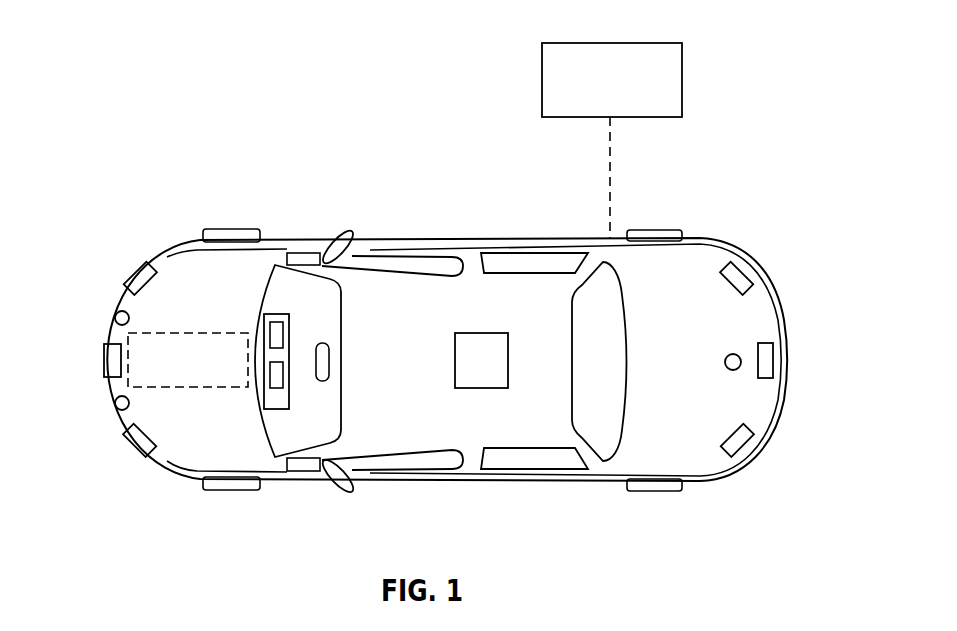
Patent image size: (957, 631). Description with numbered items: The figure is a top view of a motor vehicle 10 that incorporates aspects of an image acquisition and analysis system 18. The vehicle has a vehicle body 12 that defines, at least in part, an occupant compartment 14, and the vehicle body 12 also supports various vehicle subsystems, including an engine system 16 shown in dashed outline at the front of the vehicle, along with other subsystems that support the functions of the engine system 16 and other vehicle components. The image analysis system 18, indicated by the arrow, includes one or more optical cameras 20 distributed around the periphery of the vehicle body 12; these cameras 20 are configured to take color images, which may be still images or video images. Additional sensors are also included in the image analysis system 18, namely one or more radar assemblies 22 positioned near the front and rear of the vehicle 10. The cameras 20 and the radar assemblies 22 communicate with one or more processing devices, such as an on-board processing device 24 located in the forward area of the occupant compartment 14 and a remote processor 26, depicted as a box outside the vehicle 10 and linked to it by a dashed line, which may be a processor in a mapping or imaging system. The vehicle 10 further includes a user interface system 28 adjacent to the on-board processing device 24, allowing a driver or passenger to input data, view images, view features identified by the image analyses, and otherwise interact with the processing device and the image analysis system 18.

The motor vehicle 10 is at (512, 238).
The vehicle body 12 is at (648, 255).
The occupant compartment 14 is at (525, 435).
The engine system 16 is at (227, 378).
The image acquisition and analysis system 18 is at (386, 182).
The optical cameras 20 is at (143, 273).
The radar assemblies 22 is at (117, 314).
The on-board processing device 24 is at (277, 337).
The remote processor 26 is at (608, 42).
The user interface system 28 is at (277, 373).